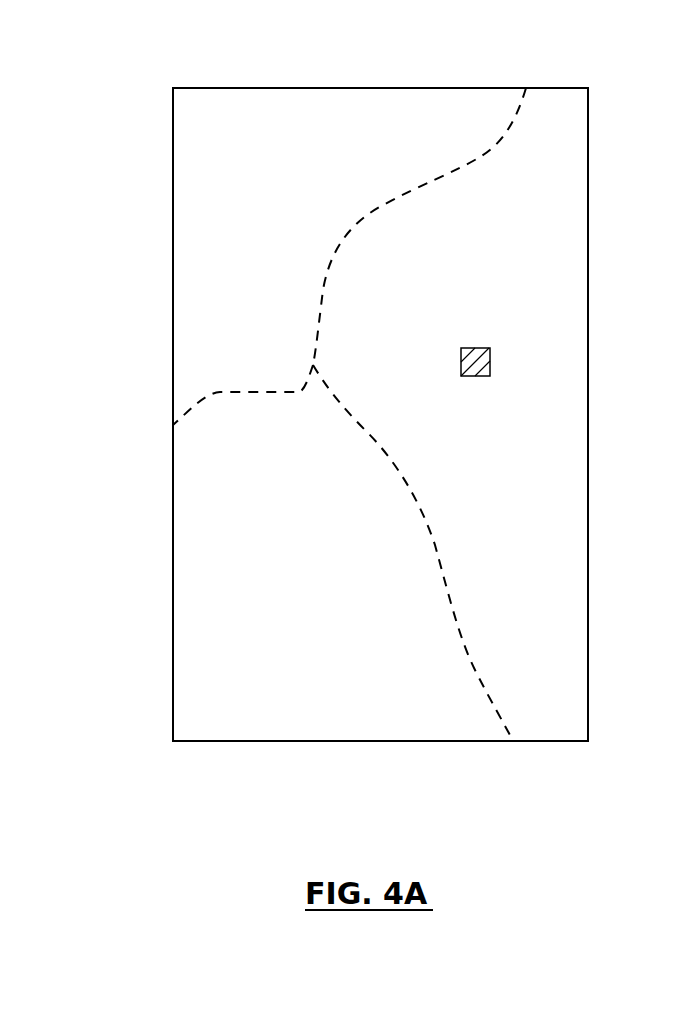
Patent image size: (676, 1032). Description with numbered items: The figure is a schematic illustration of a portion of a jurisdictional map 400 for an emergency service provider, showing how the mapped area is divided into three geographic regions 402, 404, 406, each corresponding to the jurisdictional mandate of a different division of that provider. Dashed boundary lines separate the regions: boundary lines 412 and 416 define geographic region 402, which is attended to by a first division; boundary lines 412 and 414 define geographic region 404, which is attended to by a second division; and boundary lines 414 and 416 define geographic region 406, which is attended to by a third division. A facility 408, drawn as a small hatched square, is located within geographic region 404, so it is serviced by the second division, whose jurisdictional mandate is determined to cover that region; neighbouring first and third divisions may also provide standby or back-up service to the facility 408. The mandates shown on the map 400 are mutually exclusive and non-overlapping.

The jurisdictional map 400 is at (122, 98).
The geographic region 402 is at (273, 210).
The geographic region 404 is at (533, 462).
The geographic region 406 is at (298, 575).
The facility 408 is at (473, 350).
The boundary line 412 is at (385, 204).
The boundary line 414 is at (367, 432).
The boundary line 416 is at (213, 397).